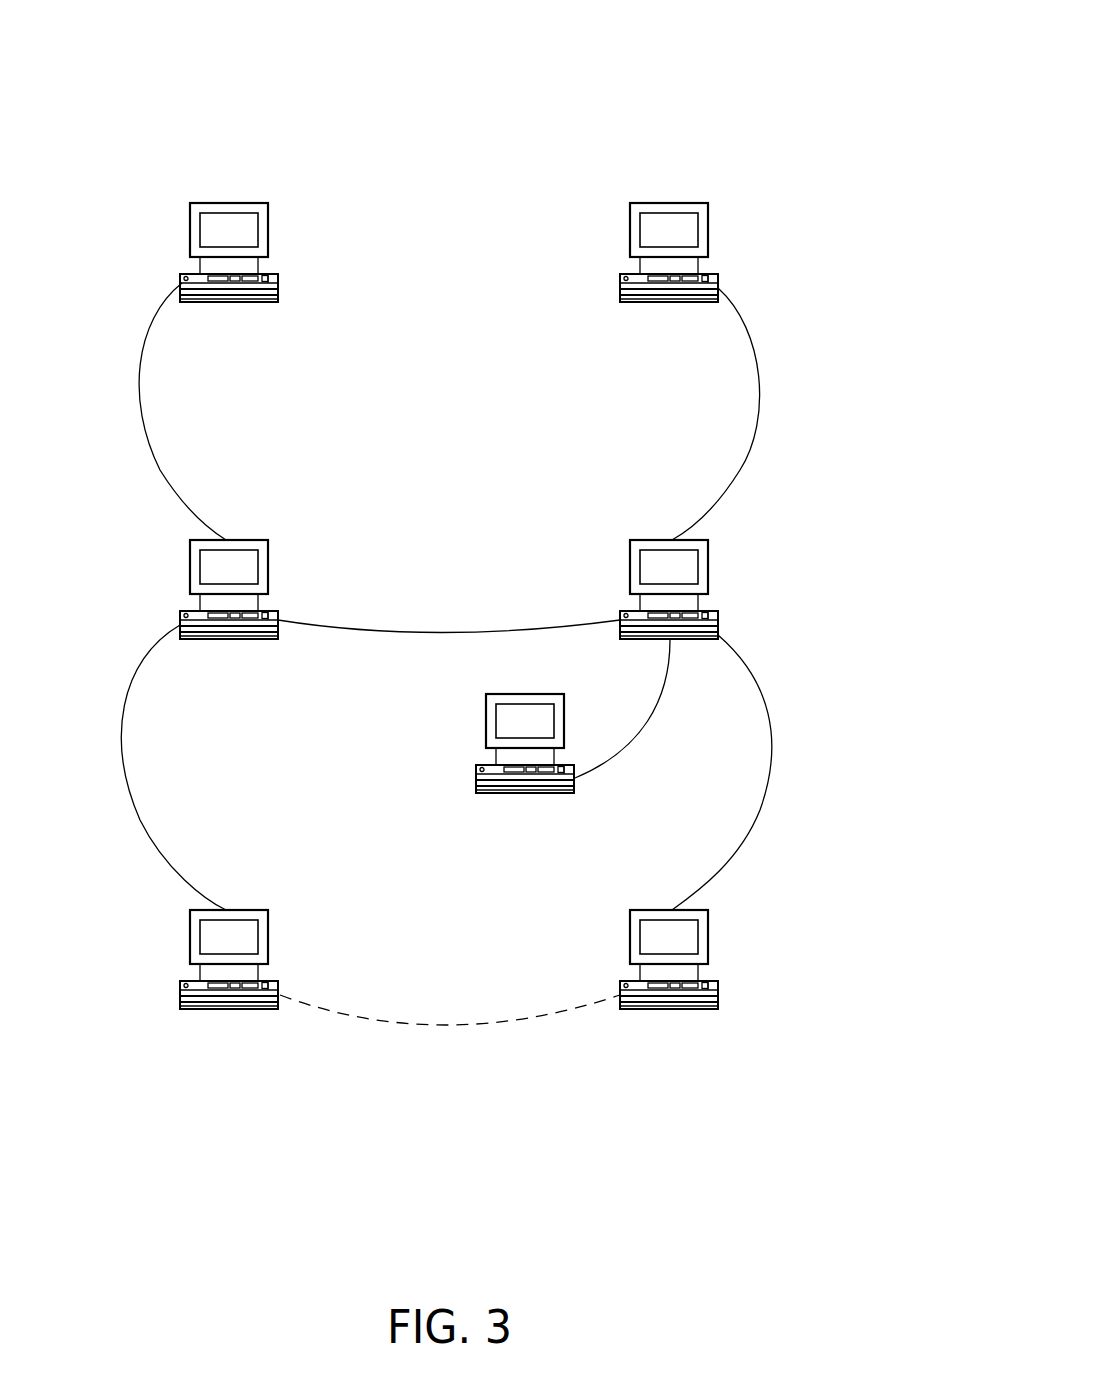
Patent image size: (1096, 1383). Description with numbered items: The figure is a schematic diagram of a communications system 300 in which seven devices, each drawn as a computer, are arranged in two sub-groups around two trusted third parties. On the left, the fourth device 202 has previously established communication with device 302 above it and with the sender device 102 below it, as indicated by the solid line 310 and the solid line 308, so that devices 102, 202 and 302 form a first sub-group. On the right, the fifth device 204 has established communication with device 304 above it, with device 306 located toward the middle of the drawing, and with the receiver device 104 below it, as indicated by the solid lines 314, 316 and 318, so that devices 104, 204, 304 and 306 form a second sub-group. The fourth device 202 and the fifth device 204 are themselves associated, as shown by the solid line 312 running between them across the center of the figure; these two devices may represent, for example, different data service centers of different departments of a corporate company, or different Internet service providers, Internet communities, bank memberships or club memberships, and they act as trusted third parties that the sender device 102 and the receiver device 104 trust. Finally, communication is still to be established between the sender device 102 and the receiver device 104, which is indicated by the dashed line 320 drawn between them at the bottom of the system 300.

The communications system 300 is at (682, 94).
The device 302 is at (232, 203).
The device 304 is at (667, 203).
The fourth device 202 is at (262, 540).
The fifth device 204 is at (712, 578).
The device 306 is at (480, 778).
The sender device 102 is at (182, 995).
The receiver device 104 is at (718, 995).
The solid line 310 is at (137, 360).
The solid line 314 is at (748, 425).
The solid line 312 is at (430, 632).
The solid line 308 is at (128, 685).
The solid line 316 is at (655, 730).
The solid line 318 is at (773, 770).
The dashed line 320 is at (435, 1030).